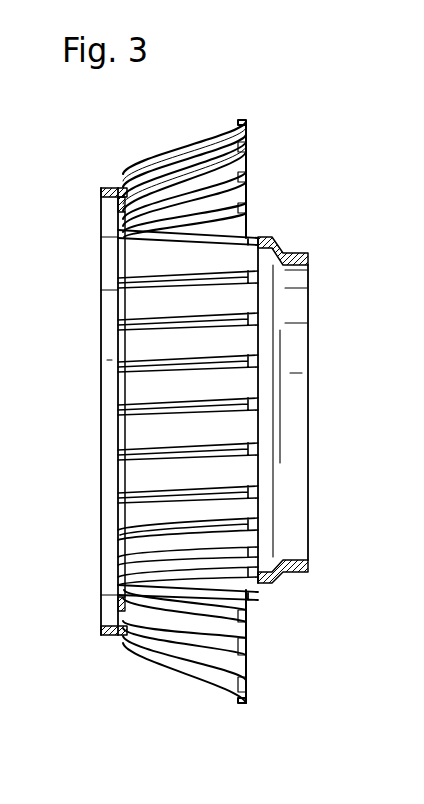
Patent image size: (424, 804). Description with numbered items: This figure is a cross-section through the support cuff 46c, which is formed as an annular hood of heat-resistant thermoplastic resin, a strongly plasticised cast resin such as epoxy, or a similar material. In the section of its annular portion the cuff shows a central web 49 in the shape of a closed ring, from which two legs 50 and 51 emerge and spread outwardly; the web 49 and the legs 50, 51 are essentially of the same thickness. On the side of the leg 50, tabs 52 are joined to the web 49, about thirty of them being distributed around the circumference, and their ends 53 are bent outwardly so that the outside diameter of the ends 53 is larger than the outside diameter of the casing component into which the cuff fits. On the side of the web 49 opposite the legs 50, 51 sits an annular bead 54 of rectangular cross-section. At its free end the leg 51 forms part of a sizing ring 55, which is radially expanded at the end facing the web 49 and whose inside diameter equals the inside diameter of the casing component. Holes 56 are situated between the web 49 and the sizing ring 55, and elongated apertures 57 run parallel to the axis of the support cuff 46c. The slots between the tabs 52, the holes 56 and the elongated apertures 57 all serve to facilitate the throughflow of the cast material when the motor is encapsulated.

The support cuff 46c is at (331, 392).
The central web 49 is at (109, 226).
The leg 50 is at (169, 151).
The leg 51 is at (162, 243).
The tabs 52 is at (238, 192).
The ends of the tabs 53 is at (243, 117).
The annular bead 54 is at (107, 187).
The sizing ring 55 is at (300, 253).
The holes 56 is at (113, 208).
The elongated apertures 57 is at (142, 411).